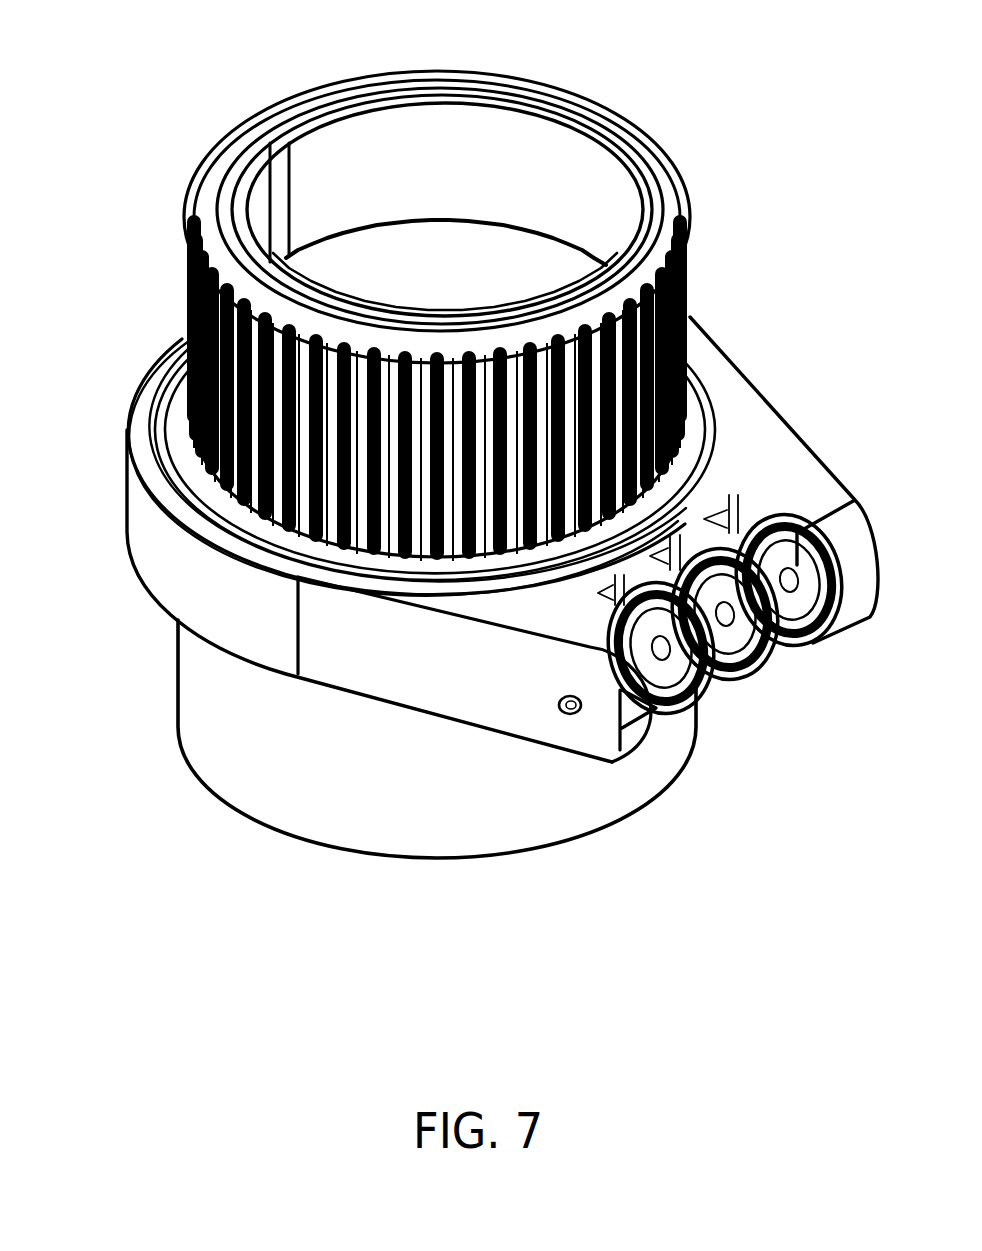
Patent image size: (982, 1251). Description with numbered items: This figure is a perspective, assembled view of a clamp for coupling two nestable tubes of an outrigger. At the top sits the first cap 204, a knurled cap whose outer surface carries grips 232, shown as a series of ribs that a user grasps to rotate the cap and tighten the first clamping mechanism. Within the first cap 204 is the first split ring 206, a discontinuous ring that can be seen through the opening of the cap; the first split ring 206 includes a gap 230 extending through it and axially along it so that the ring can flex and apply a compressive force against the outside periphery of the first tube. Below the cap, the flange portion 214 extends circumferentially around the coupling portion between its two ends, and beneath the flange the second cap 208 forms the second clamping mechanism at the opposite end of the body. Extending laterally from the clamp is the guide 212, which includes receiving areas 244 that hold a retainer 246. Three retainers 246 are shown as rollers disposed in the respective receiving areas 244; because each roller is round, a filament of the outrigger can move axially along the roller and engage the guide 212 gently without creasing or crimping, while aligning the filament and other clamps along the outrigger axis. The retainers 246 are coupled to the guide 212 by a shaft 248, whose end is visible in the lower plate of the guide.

The first cap 204 is at (664, 207).
The first split ring 206 is at (372, 137).
The second cap 208 is at (215, 740).
The guide 212 is at (152, 553).
The flange portion 214 is at (175, 386).
The gap 230 is at (270, 143).
The grips 232 is at (693, 277).
The receiving areas 244 is at (575, 585).
The retainer 246 is at (813, 603).
The shaft 248 is at (568, 713).